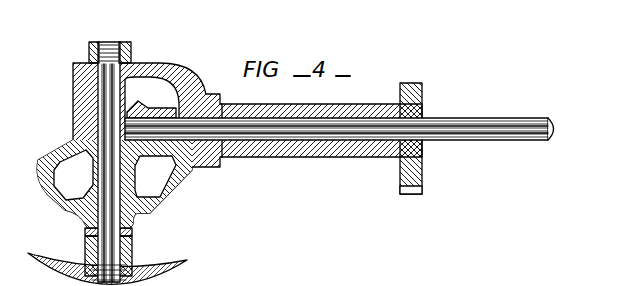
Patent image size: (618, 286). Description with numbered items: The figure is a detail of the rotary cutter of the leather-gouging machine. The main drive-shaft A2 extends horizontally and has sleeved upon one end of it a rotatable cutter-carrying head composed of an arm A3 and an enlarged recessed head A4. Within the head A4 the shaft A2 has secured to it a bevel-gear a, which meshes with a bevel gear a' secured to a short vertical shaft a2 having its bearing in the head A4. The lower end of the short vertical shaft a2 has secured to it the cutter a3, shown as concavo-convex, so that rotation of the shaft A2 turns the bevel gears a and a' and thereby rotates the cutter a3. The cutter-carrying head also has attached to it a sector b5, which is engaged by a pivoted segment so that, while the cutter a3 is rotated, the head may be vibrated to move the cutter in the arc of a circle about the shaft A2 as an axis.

The short vertical shaft a2 is at (110, 50).
The bevel-gear a is at (151, 98).
The enlarged recessed head A4 is at (75, 124).
The bevel gear a' is at (155, 176).
The arm A3 is at (289, 157).
The sector b5 is at (421, 90).
The main drive-shaft A2 is at (503, 121).
The cutter a3 is at (173, 249).